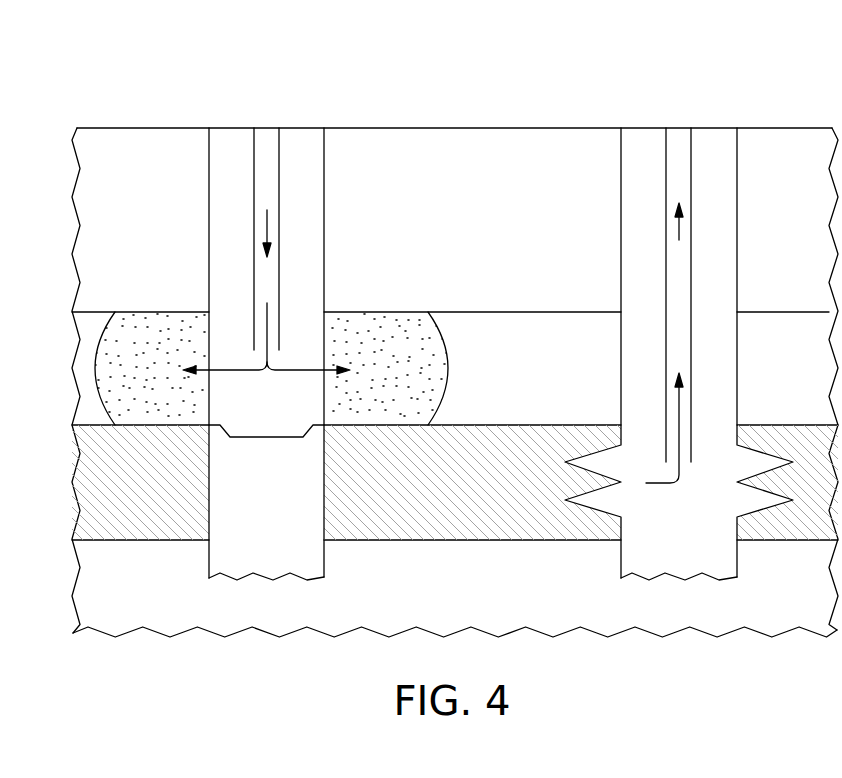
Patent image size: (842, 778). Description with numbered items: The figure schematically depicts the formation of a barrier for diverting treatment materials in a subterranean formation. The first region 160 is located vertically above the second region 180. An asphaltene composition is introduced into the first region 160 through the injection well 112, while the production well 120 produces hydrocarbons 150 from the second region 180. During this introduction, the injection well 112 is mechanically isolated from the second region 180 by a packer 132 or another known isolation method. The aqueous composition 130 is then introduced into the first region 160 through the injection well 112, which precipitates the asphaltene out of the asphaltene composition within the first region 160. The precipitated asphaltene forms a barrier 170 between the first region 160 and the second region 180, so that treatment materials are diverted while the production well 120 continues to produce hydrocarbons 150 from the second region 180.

The injection well 112 is at (295, 315).
The production well 120 is at (679, 315).
The aqueous composition 130 is at (267, 227).
The packer 132 is at (270, 437).
The hydrocarbons 150 is at (680, 228).
The first region 160 is at (513, 330).
The barrier 170 is at (392, 330).
The second region 180 is at (468, 523).